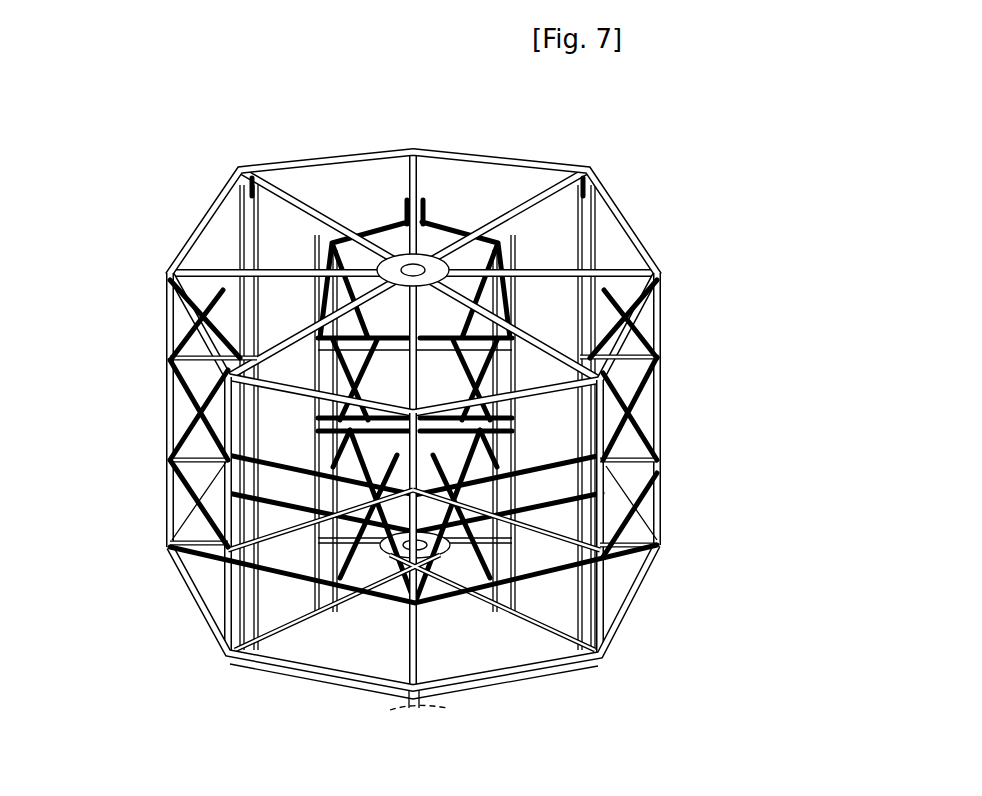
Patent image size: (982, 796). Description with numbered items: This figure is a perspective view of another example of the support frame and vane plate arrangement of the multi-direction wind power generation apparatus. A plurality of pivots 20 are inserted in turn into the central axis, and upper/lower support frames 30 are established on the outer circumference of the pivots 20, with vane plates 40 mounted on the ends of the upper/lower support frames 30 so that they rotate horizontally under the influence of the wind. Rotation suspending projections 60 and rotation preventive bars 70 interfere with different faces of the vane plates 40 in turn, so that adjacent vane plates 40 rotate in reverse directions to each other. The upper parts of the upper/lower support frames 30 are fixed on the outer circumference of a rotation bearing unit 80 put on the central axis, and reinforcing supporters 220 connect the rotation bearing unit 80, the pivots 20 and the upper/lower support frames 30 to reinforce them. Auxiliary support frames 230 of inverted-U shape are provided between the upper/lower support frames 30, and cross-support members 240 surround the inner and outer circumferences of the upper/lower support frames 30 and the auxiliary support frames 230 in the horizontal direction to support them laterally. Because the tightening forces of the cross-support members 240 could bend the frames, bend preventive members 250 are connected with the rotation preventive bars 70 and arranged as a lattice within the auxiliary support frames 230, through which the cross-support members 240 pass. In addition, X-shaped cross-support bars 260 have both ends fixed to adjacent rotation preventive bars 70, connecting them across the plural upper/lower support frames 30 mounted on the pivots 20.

The pivot 20 is at (415, 708).
The upper/lower support frame 30 is at (552, 182).
The vane plate 40 is at (567, 597).
The rotation suspending projection 60 is at (250, 657).
The rotation preventive bar 70 is at (322, 565).
The rotation bearing unit 80 is at (407, 258).
The reinforcing supporter 220 is at (495, 215).
The auxiliary support frame 230 is at (612, 268).
The cross-support member 240 is at (660, 540).
The bend preventive member 250 is at (223, 547).
The cross-support bar 260 is at (490, 580).